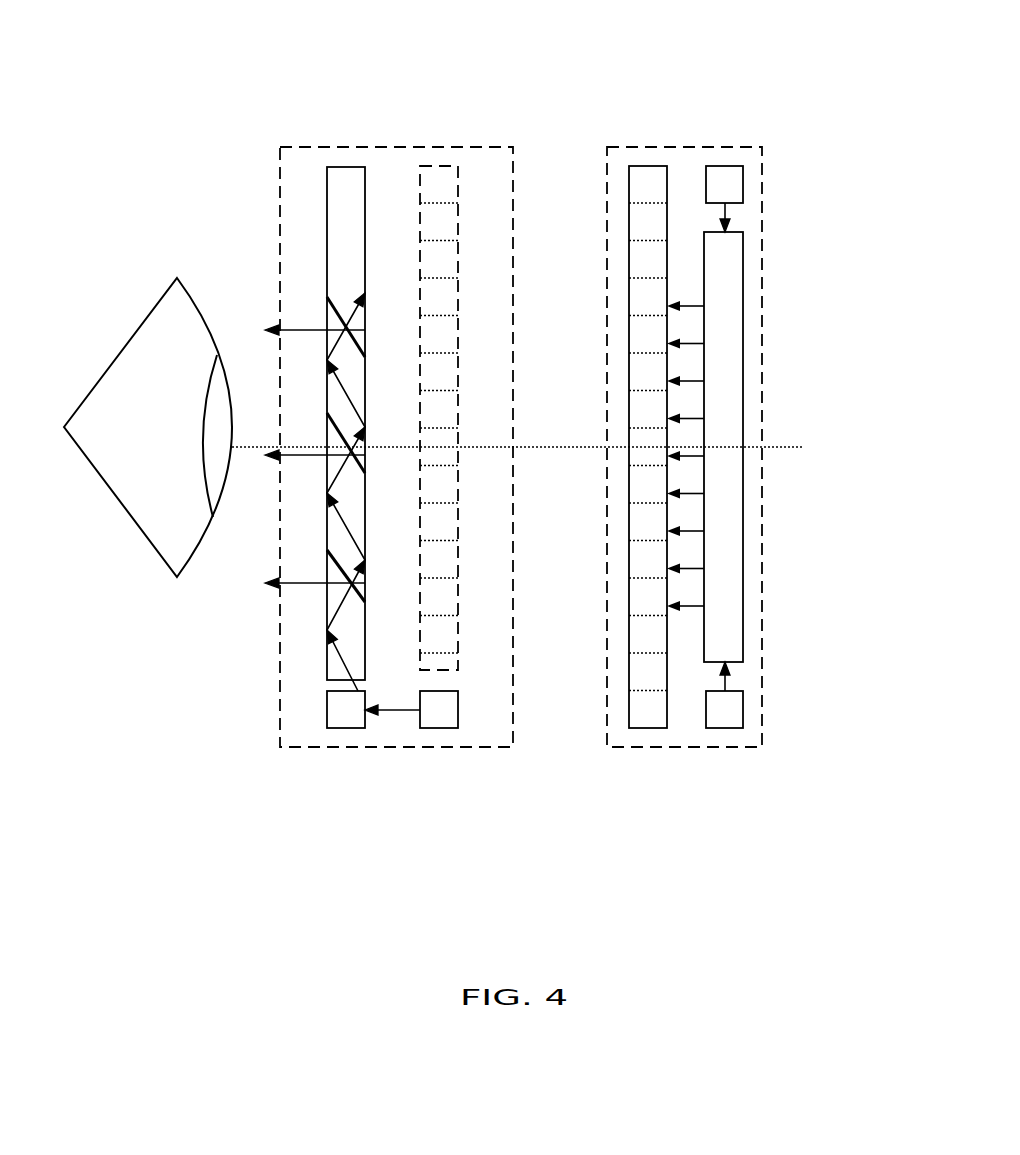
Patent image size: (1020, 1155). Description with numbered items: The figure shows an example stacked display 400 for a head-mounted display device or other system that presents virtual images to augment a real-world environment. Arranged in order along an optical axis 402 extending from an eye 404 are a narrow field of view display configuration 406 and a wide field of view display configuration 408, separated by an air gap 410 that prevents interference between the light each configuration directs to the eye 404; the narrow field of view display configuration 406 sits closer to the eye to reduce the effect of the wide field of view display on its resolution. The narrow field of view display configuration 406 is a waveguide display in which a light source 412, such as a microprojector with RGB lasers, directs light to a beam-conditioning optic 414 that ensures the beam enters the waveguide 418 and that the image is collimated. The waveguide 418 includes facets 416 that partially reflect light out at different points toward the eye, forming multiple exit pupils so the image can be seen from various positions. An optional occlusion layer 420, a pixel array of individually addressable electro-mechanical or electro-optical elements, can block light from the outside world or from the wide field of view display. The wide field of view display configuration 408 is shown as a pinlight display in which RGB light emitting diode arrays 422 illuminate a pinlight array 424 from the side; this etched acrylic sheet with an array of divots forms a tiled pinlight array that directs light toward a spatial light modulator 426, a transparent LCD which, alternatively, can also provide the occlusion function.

The stacked display 400 is at (483, 47).
The optical axis 402 is at (793, 448).
The eye 404 is at (100, 482).
The narrow field of view display configuration 406 is at (305, 747).
The wide field of view display configuration 408 is at (648, 747).
The air gap 410 is at (555, 756).
The light source 412 is at (458, 700).
The beam-conditioning optic 414 is at (327, 700).
The facets 416 is at (365, 345).
The waveguide 418 is at (327, 195).
The occlusion layer 420 is at (458, 203).
The RGB light emitting diode arrays 422 is at (743, 184).
The pinlight array 424 is at (743, 559).
The spatial light modulator 426 is at (628, 522).